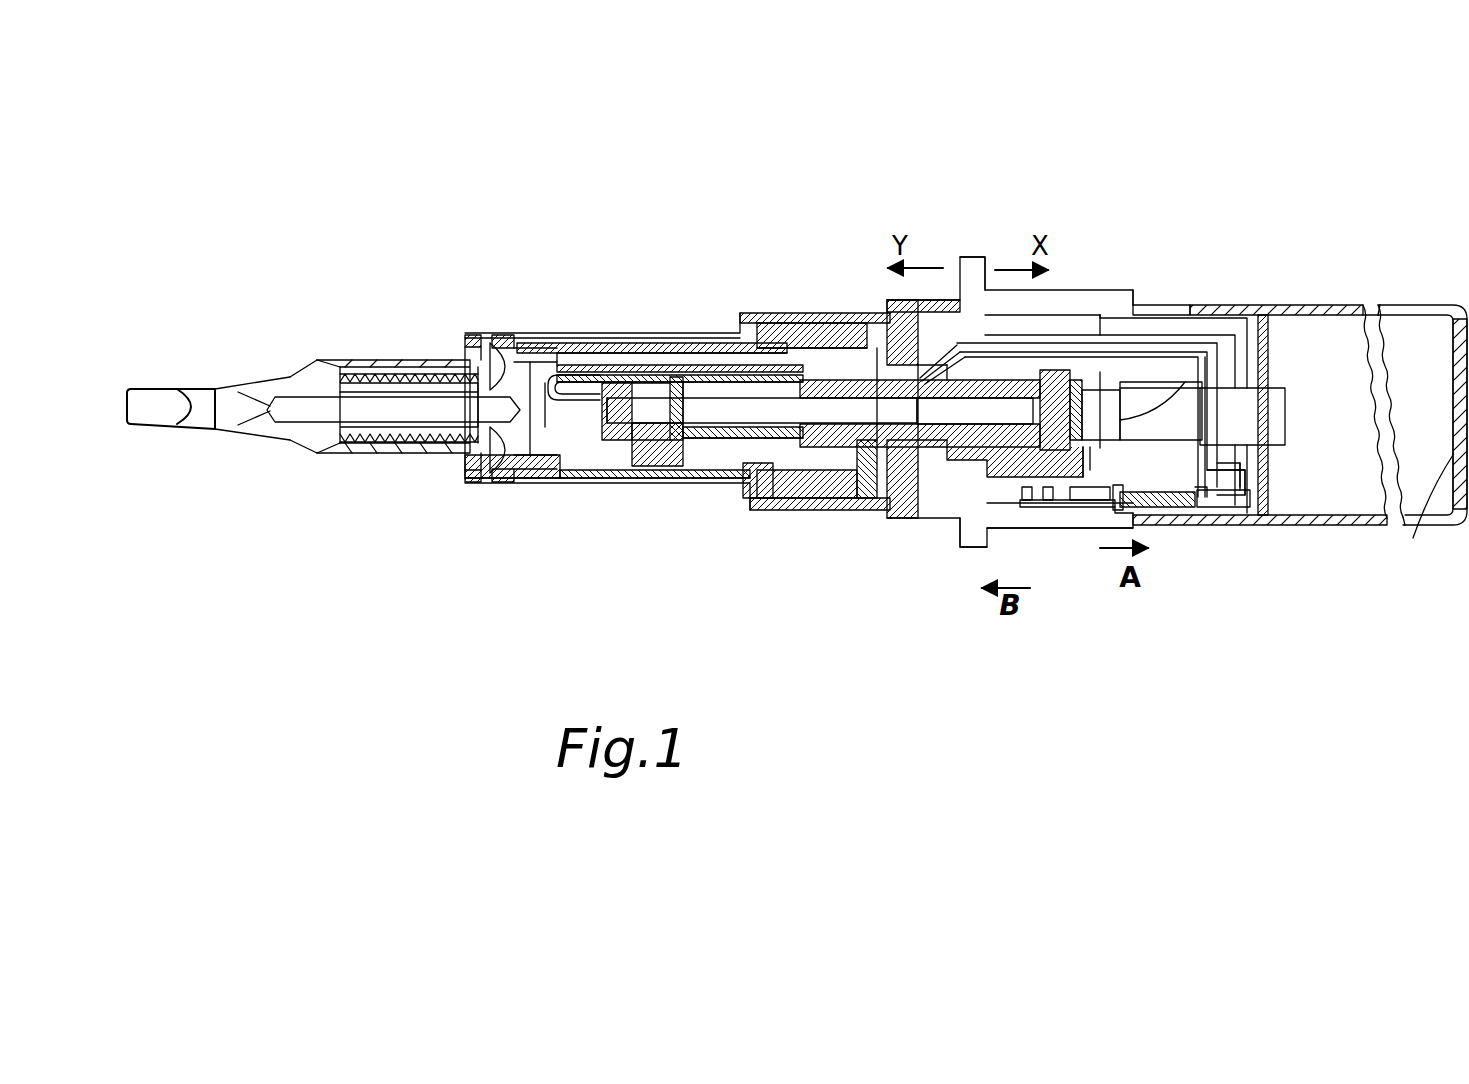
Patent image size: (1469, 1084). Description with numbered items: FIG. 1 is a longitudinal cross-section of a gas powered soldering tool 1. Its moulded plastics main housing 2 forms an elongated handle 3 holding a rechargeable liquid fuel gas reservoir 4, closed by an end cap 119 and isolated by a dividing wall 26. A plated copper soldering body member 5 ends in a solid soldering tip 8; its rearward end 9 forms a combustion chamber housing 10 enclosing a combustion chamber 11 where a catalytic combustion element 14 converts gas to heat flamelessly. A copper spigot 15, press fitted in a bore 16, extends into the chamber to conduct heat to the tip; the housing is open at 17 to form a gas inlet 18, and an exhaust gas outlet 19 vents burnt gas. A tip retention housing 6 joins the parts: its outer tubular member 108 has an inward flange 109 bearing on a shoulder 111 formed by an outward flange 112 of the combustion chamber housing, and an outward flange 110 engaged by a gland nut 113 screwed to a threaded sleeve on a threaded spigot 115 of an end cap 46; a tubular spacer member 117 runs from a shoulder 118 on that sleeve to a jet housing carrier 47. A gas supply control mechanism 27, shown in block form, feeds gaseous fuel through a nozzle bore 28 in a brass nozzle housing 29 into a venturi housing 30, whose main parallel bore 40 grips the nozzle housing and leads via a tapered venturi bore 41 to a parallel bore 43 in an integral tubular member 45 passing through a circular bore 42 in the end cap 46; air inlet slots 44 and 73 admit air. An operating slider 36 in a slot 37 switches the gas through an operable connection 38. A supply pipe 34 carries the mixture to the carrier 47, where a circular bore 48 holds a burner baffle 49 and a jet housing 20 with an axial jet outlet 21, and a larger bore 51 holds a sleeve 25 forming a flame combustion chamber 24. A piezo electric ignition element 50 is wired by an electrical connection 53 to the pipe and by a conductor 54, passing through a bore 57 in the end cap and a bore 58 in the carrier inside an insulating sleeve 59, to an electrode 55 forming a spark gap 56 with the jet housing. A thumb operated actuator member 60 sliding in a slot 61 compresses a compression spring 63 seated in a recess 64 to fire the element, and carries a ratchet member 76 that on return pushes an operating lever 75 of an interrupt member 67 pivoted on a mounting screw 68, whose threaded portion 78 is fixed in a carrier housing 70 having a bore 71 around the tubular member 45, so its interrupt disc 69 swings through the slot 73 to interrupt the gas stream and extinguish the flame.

The soldering tool 1 is at (355, 185).
The main housing 2 is at (1320, 352).
The elongated handle 3 is at (1350, 306).
The liquid fuel gas reservoir 4 is at (1240, 355).
The soldering body member 5 is at (245, 428).
The tip retention housing 6 is at (583, 334).
The soldering tip 8 is at (152, 400).
The rearward end 9 is at (292, 380).
The combustion chamber housing 10 is at (385, 365).
The combustion chamber 11 is at (388, 453).
The gas catalytic combustion element 14 is at (372, 447).
The spigot 15 is at (325, 440).
The bore 16 is at (333, 410).
The open end 17 is at (532, 345).
The gas inlet 18 is at (515, 343).
The exhaust gas outlet 19 is at (352, 360).
The jet housing 20 is at (605, 440).
The jet outlet 21 is at (575, 432).
The flame combustion chamber 24 is at (534, 375).
The sleeve 25 is at (590, 343).
The dividing wall 26 is at (1250, 522).
The gas supply control mechanism 27 is at (1278, 413).
The nozzle bore 28 is at (1123, 380).
The nozzle housing 29 is at (1173, 343).
The venturi housing 30 is at (1095, 352).
The supply pipe 34 is at (710, 432).
The operating slider 36 is at (972, 257).
The slot 37 is at (1157, 318).
The operable connection 38 is at (1245, 333).
The main parallel bore 40 is at (1152, 308).
The tapered venturi bore 41 is at (1030, 385).
The circular bore 42 is at (852, 510).
The parallel bore 43 is at (897, 520).
The air inlet slot 44 is at (1110, 365).
The tubular member 45 is at (955, 550).
The end cap 46 is at (893, 302).
The jet housing carrier 47 is at (640, 466).
The circular bore 48 is at (660, 466).
The burner baffle 49 is at (655, 405).
The piezo electric ignition element 50 is at (1222, 507).
The bore 51 is at (628, 374).
The electrical connection 53 is at (1196, 486).
The electrical conductor 54 is at (1240, 480).
The electrode 55 is at (528, 478).
The spark gap 56 is at (548, 478).
The bore 57 is at (921, 372).
The bore 58 is at (678, 368).
The insulating sleeve 59 is at (655, 352).
The actuator member 60 is at (1003, 503).
The slot 61 is at (1165, 525).
The compression spring 63 is at (1120, 495).
The recess 64 is at (1110, 505).
The interrupt member 67 is at (1125, 460).
The mounting screw 68 is at (1018, 478).
The interrupt disc 69 is at (1018, 413).
The carrier housing 70 is at (1000, 375).
The circular bore 71 is at (945, 520).
The slot 73 is at (1112, 385).
The operating lever 75 is at (1100, 520).
The ratchet member 76 is at (1040, 520).
The threaded portion 78 is at (1050, 520).
The outer tubular member 108 is at (617, 362).
The inwardly extending annular flange 109 is at (464, 345).
The outwardly extending annular flange 110 is at (780, 338).
The shoulder 111 is at (480, 340).
The outwardly extending annular flange 112 is at (496, 340).
The gland nut 113 is at (790, 322).
The threaded spigot 115 is at (882, 510).
The tubular spacer member 117 is at (828, 325).
The shoulder 118 is at (790, 510).
The end cap 119 is at (1413, 538).